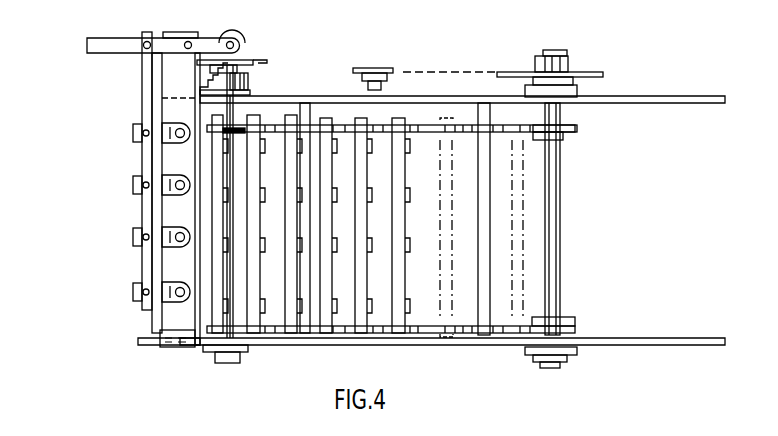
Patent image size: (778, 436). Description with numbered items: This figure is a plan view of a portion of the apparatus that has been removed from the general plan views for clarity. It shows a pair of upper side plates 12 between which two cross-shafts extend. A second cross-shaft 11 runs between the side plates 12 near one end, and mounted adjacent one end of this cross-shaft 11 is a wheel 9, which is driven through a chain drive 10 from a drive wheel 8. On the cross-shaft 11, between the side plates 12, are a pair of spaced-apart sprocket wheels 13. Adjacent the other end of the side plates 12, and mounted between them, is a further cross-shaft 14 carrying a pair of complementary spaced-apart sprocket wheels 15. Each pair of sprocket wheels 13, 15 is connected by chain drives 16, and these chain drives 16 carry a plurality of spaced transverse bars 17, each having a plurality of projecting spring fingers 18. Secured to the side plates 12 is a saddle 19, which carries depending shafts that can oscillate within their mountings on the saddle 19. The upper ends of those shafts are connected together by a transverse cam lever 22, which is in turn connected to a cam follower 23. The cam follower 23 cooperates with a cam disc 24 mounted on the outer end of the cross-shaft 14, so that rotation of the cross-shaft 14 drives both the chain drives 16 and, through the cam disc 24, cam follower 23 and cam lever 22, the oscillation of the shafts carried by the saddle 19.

The drive wheel 8 is at (364, 68).
The wheel 9 is at (512, 72).
The chain drive 10 is at (426, 70).
The second cross-shaft 11 is at (552, 197).
The upper side plates 12 is at (500, 104).
The sprocket wheels 13 is at (558, 138).
The further cross-shaft 14 is at (227, 214).
The sprocket wheels 15 is at (225, 128).
The chain drives 16 is at (427, 125).
The transverse bars 17 is at (400, 178).
The spring fingers 18 is at (368, 318).
The saddle 19 is at (160, 320).
The transverse cam lever 22 is at (140, 210).
The cam follower 23 is at (241, 31).
The cam disc 24 is at (263, 60).